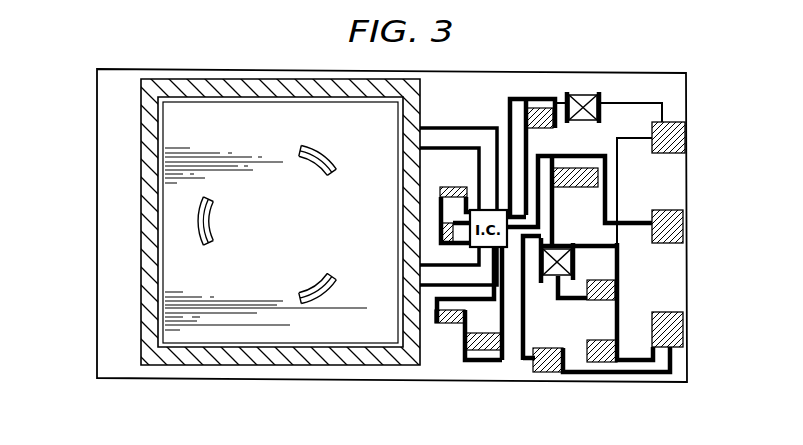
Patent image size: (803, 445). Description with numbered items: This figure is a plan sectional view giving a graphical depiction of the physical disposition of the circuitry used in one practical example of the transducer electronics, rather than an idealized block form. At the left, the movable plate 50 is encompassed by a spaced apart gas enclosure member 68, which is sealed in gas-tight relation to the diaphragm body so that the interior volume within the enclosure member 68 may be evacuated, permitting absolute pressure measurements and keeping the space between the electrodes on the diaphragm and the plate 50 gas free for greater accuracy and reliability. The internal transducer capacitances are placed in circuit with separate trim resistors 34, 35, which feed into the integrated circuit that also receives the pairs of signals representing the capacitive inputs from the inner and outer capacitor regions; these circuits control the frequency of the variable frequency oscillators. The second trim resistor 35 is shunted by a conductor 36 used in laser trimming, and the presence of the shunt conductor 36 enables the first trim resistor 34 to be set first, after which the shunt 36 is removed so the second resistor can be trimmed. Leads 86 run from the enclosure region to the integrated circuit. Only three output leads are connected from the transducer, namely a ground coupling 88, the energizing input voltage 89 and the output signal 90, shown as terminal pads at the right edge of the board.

The trim resistor 34 is at (452, 179).
The trim resistor 35 is at (480, 350).
The shunt conductor 36 is at (499, 362).
The movable plate 50 is at (284, 223).
The gas enclosure member 68 is at (141, 217).
The electrode leads 86 is at (488, 210).
The ground coupling 88 is at (686, 145).
The energizing input voltage 89 is at (684, 335).
The output signal 90 is at (684, 233).